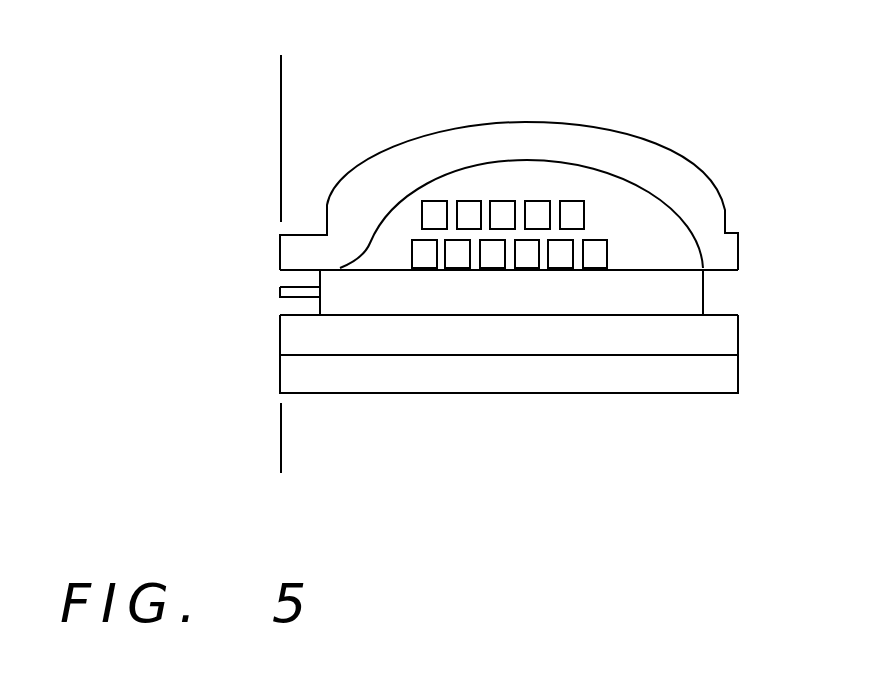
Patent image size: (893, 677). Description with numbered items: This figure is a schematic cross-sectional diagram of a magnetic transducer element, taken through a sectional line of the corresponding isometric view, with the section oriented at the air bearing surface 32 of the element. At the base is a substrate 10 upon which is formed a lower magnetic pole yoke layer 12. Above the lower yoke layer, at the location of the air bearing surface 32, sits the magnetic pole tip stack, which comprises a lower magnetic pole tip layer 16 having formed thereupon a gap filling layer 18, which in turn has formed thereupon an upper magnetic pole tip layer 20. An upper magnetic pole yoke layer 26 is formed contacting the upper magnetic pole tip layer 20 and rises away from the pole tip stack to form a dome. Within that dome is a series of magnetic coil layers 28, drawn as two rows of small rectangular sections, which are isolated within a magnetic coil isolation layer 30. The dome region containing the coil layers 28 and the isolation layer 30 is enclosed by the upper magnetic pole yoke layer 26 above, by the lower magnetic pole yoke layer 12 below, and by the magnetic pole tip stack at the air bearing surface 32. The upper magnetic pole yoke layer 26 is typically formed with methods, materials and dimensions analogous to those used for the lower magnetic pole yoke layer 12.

The substrate 10 is at (292, 365).
The lower magnetic pole yoke layer 12 is at (292, 337).
The lower magnetic pole tip layer 16 is at (292, 309).
The gap filling layer 18 is at (292, 291).
The upper magnetic pole tip layer 20 is at (292, 277).
The upper magnetic pole yoke layer 26 is at (292, 248).
The magnetic coil layers 28 is at (600, 213).
The magnetic coil isolation layer 30 is at (647, 233).
The air bearing surface 32 is at (254, 138).